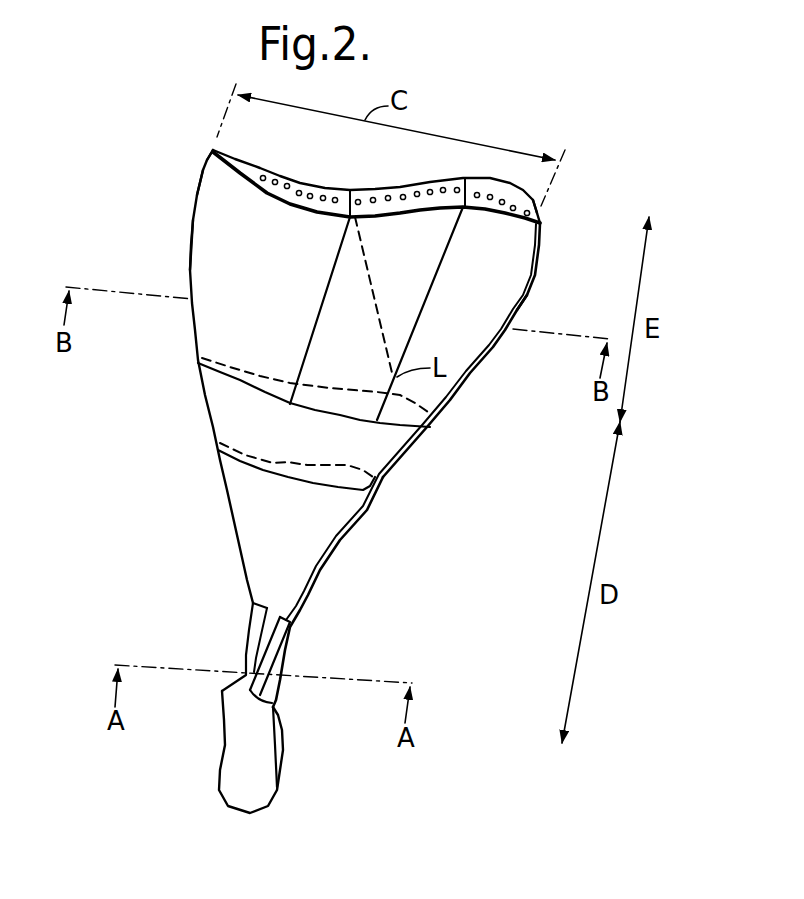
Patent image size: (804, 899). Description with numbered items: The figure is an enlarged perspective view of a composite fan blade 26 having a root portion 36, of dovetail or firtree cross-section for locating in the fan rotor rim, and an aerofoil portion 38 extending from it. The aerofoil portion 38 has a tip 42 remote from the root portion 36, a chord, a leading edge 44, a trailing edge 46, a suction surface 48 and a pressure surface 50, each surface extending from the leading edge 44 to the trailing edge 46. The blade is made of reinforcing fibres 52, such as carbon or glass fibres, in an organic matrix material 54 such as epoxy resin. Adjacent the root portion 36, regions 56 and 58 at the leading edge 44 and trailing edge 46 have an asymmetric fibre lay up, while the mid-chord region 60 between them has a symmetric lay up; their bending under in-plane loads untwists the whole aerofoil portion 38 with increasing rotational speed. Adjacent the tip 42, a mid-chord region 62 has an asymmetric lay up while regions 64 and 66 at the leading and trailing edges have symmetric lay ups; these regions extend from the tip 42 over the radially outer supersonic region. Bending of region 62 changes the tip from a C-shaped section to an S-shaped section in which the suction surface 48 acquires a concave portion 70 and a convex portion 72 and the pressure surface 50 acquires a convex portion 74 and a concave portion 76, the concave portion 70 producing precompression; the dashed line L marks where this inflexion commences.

The fan blade 26 is at (498, 292).
The root portion 36 is at (250, 767).
The aerofoil portion 38 is at (243, 423).
The tip 42 is at (487, 190).
The leading edge 44 is at (452, 400).
The trailing edge 46 is at (192, 327).
The suction surface 48 is at (315, 537).
The pressure surface 50 is at (288, 462).
The reinforcing fibres 52 is at (275, 185).
The matrix material 54 is at (367, 214).
The region at the leading edge adjacent the root portion 56 is at (283, 650).
The region at the trailing edge adjacent the root portion 58 is at (253, 632).
The mid-chord region 60 is at (277, 618).
The mid-chord region adjacent the tip 62 is at (338, 335).
The region at the leading edge adjacent the tip 64 is at (470, 338).
The region at the trailing edge adjacent the tip 66 is at (210, 243).
The concave portion 70 is at (440, 215).
The convex portion 72 is at (233, 202).
The convex portion 74 is at (531, 208).
The concave portion 76 is at (232, 152).